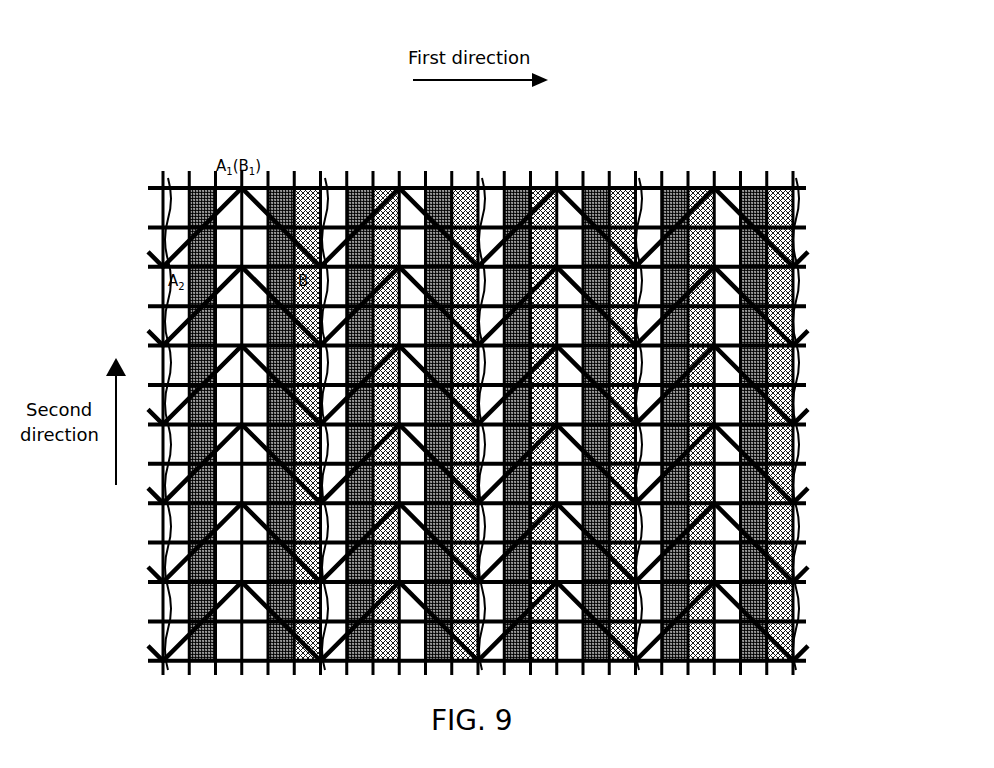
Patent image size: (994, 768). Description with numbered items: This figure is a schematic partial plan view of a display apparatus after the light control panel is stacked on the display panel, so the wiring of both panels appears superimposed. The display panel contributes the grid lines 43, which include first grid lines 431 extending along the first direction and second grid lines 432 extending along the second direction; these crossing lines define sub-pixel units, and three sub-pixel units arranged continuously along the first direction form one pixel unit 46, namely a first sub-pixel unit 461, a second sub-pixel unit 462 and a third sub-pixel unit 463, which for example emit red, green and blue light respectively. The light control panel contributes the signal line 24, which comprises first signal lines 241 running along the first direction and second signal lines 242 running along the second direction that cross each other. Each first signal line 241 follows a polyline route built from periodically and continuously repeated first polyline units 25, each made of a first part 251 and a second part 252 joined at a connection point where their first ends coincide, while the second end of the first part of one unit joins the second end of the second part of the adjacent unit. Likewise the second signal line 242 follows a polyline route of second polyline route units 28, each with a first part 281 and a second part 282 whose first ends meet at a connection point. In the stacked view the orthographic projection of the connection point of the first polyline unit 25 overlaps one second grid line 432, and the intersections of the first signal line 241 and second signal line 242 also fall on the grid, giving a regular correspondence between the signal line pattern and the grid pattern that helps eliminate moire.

The signal line 24 is at (880, 243).
The first signal line 241 is at (790, 247).
The second signal line 242 is at (790, 282).
The first polyline unit 25 is at (283, 83).
The first part 251 is at (194, 177).
The second part 252 is at (272, 177).
The second polyline route unit 28 is at (885, 352).
The first part 281 is at (790, 359).
The second part 282 is at (790, 393).
The grid lines 43 is at (817, 83).
The first grid line 431 is at (732, 177).
The second grid line 432 is at (788, 177).
The pixel unit 46 is at (403, 108).
The first sub-pixel unit 461 is at (318, 177).
The second sub-pixel unit 462 is at (355, 177).
The third sub-pixel unit 463 is at (392, 177).